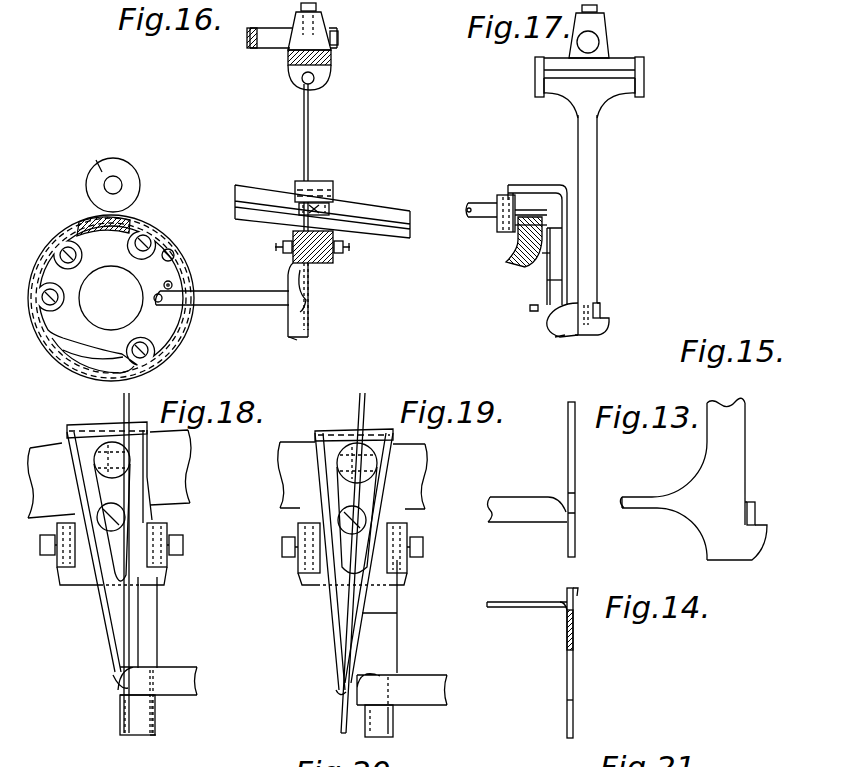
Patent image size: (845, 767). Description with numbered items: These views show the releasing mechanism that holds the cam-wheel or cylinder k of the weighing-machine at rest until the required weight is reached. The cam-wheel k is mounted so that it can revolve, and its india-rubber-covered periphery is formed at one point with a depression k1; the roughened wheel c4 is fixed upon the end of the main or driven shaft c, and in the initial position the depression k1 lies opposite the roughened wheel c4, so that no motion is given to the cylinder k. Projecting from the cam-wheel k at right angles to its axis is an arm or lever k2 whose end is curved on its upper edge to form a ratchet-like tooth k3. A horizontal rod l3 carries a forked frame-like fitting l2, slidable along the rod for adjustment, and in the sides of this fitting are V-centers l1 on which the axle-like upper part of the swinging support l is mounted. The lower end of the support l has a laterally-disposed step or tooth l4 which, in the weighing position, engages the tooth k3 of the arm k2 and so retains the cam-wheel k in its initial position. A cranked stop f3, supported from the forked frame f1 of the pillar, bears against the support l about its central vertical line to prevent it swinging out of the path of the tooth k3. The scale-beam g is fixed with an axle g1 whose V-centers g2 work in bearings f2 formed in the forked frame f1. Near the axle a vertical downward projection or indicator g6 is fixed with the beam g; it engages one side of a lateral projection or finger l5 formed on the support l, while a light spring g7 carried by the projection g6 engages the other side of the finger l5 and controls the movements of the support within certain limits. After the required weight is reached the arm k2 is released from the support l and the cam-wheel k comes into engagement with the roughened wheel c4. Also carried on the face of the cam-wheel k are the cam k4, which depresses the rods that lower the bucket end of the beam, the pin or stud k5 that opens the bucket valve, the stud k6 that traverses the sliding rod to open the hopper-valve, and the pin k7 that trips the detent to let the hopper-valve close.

In FIG. 16, the main or driven shaft c is at (118, 184).
In FIG. 16, the roughened wheel c4 is at (99, 165).
In FIG. 16, the cam-wheel or cylinder k is at (72, 245).
In FIG. 16, the depression k1 is at (106, 219).
In FIG. 16, the arm or lever k2 is at (229, 301).
In FIG. 17, the arm or lever k2 is at (600, 302).
In FIG. 15, the arm or lever k2 is at (756, 503).
In FIG. 13, the arm or lever k2 is at (500, 497).
In FIG. 14, the arm or lever k2 is at (498, 602).
In FIG. 18, the arm or lever k2 is at (182, 668).
In FIG. 19, the arm or lever k2 is at (419, 683).
In FIG. 17, the ratchet-like tooth k3 is at (602, 307).
In FIG. 15, the ratchet-like tooth k3 is at (758, 512).
In FIG. 13, the ratchet-like tooth k3 is at (560, 496).
In FIG. 14, the ratchet-like tooth k3 is at (565, 598).
In FIG. 18, the ratchet-like tooth k3 is at (151, 700).
In FIG. 19, the ratchet-like tooth k3 is at (389, 683).
In FIG. 16, the cam k4 is at (47, 342).
In FIG. 16, the pin or stud k5 is at (172, 284).
In FIG. 16, the stud k6 is at (174, 257).
In FIG. 16, the pin or stud k7 is at (60, 255).
In FIG. 16, the swinging support l is at (309, 135).
In FIG. 17, the swinging support l is at (597, 185).
In FIG. 15, the swinging support l is at (746, 452).
In FIG. 14, the swinging support l is at (574, 640).
In FIG. 18, the swinging support l is at (130, 400).
In FIG. 19, the swinging support l is at (366, 398).
In FIG. 16, the V-centers l1 is at (316, 80).
In FIG. 17, the V-centers l1 is at (546, 94).
In FIG. 16, the forked frame-like fitting l2 is at (331, 58).
In FIG. 17, the forked frame-like fitting l2 is at (634, 62).
In FIG. 16, the horizontal rod l3 is at (330, 28).
In FIG. 17, the horizontal rod l3 is at (600, 42).
In FIG. 17, the step or tooth l4 is at (606, 326).
In FIG. 15, the step or tooth l4 is at (756, 545).
In FIG. 14, the step or tooth l4 is at (577, 592).
In FIG. 18, the step or tooth l4 is at (120, 707).
In FIG. 19, the step or tooth l4 is at (341, 712).
In FIG. 16, the lateral projection or finger l5 is at (308, 303).
In FIG. 17, the lateral projection or finger l5 is at (545, 320).
In FIG. 15, the lateral projection or finger l5 is at (625, 509).
In FIG. 14, the lateral projection or finger l5 is at (574, 700).
In FIG. 16, the scale-beam g is at (366, 207).
In FIG. 18, the scale-beam g is at (45, 447).
In FIG. 19, the scale-beam g is at (421, 467).
In FIG. 16, the axle g1 is at (333, 211).
In FIG. 17, the axle g1 is at (478, 203).
In FIG. 18, the axle g1 is at (106, 440).
In FIG. 19, the axle g1 is at (344, 432).
In FIG. 17, the V-centers g2 is at (520, 236).
In FIG. 18, the V-centers g2 is at (92, 470).
In FIG. 19, the V-centers g2 is at (340, 470).
In FIG. 16, the downward projection or indicator g6 is at (326, 186).
In FIG. 17, the downward projection or indicator g6 is at (556, 178).
In FIG. 18, the downward projection or indicator g6 is at (140, 626).
In FIG. 19, the downward projection or indicator g6 is at (365, 612).
In FIG. 16, the light spring g7 is at (310, 291).
In FIG. 17, the light spring g7 is at (560, 282).
In FIG. 18, the light spring g7 is at (110, 648).
In FIG. 19, the light spring g7 is at (338, 645).
In FIG. 16, the forked frame f1 is at (341, 262).
In FIG. 17, the forked frame f1 is at (528, 270).
In FIG. 18, the forked frame f1 is at (152, 515).
In FIG. 19, the forked frame f1 is at (310, 517).
In FIG. 17, the bearings f2 is at (512, 268).
In FIG. 18, the bearings f2 is at (58, 522).
In FIG. 19, the bearings f2 is at (386, 487).
In FIG. 16, the stop f3 is at (297, 339).
In FIG. 17, the stop f3 is at (562, 339).
In FIG. 18, the stop f3 is at (156, 733).
In FIG. 19, the stop f3 is at (393, 726).